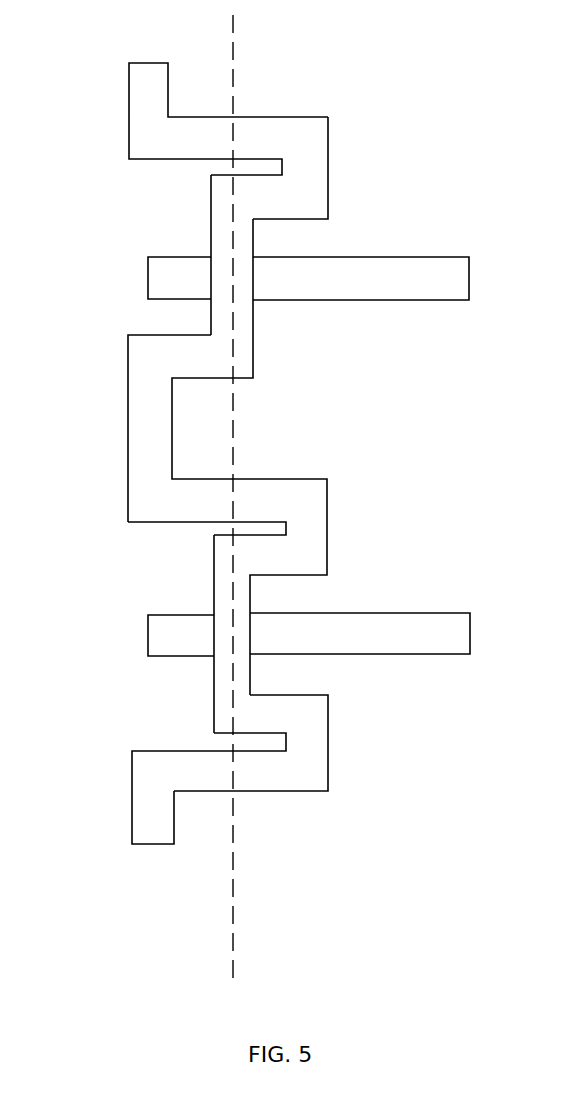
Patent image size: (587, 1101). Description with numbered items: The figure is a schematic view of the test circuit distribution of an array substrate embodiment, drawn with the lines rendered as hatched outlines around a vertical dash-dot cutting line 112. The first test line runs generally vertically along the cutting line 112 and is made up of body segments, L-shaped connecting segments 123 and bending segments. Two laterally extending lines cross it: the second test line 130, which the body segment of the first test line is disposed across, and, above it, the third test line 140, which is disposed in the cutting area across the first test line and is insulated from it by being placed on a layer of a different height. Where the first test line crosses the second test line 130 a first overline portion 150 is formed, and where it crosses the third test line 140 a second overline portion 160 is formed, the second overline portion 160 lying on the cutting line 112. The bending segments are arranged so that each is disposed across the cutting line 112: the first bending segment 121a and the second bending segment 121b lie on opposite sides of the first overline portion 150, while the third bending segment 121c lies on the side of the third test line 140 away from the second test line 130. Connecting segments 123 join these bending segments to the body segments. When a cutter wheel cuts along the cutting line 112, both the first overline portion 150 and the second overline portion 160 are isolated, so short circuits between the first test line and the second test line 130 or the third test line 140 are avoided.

The cutting line 112 is at (229, 45).
The first bending segment 121a is at (145, 505).
The second bending segment 121b is at (146, 778).
The third bending segment 121c is at (153, 134).
The connecting segment 123 is at (310, 183).
The second test line 130 is at (460, 640).
The third test line 140 is at (460, 275).
The first overline portion 150 is at (213, 657).
The second overline portion 160 is at (212, 257).